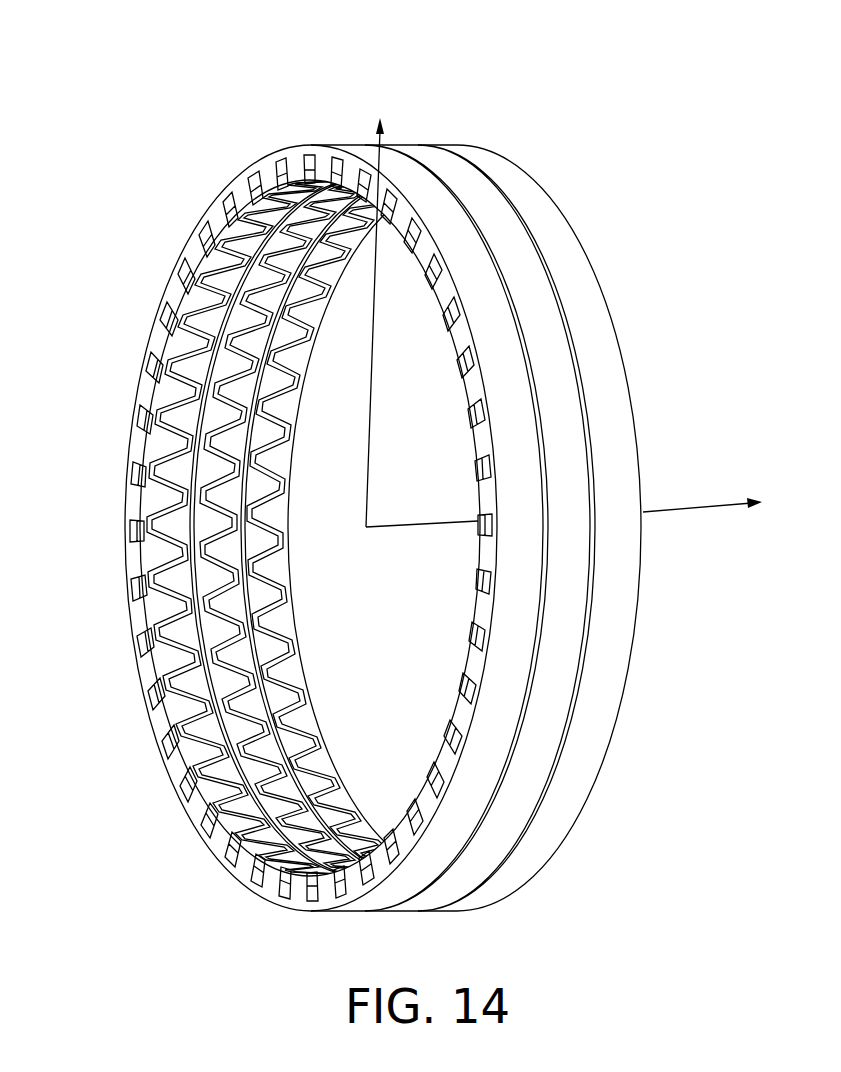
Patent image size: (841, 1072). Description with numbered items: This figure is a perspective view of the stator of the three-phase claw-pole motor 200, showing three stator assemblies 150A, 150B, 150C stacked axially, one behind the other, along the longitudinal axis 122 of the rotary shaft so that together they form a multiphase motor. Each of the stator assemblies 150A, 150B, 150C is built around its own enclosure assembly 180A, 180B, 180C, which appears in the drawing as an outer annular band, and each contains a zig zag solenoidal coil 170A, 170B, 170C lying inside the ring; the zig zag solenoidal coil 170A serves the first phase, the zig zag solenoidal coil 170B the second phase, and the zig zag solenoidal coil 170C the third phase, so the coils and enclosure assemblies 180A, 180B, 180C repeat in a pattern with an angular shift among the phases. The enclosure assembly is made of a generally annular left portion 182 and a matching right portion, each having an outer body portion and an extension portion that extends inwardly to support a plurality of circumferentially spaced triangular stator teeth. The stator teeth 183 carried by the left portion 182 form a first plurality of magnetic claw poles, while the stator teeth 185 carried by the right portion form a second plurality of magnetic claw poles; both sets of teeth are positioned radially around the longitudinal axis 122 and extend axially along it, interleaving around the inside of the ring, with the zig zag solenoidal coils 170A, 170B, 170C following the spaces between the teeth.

The three-phase claw-pole motor 200 is at (194, 77).
The stator assembly 150A is at (347, 142).
The stator assembly 150B is at (407, 142).
The stator assembly 150C is at (468, 142).
The left portion 182 is at (136, 361).
The stator teeth 183 is at (162, 394).
The stator teeth 185 is at (290, 453).
The zig zag solenoidal coil 170A is at (135, 578).
The zig zag solenoidal coil 170B is at (197, 653).
The zig zag solenoidal coil 170C is at (292, 585).
The enclosure assembly 180A is at (223, 871).
The enclosure assembly 180B is at (418, 914).
The enclosure assembly 180C is at (531, 864).
The longitudinal axis 122 is at (694, 505).